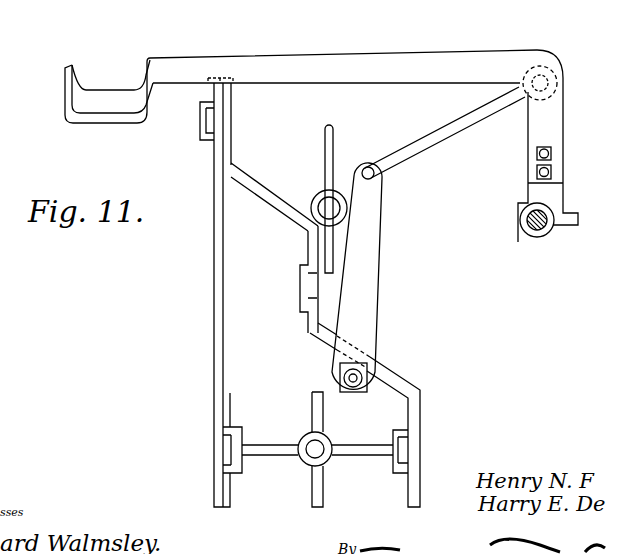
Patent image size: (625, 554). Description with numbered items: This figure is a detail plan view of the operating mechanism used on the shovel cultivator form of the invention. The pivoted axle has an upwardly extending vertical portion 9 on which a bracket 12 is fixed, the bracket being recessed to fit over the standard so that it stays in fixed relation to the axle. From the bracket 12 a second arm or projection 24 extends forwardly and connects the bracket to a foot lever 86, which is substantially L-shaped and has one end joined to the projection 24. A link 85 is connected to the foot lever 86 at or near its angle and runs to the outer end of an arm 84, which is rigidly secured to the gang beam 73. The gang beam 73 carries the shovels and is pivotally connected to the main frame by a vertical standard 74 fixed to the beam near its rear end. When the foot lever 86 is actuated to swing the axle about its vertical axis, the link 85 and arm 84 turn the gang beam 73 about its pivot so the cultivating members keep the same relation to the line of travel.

The foot lever 86 is at (396, 52).
The link 85 is at (432, 138).
The arm 84 is at (388, 242).
The second arm or projection 24 is at (554, 193).
The bracket 12 is at (553, 235).
The vertical portion of the axle 9 is at (533, 231).
The gang beam 73 is at (421, 415).
The vertical standard 74 is at (310, 447).